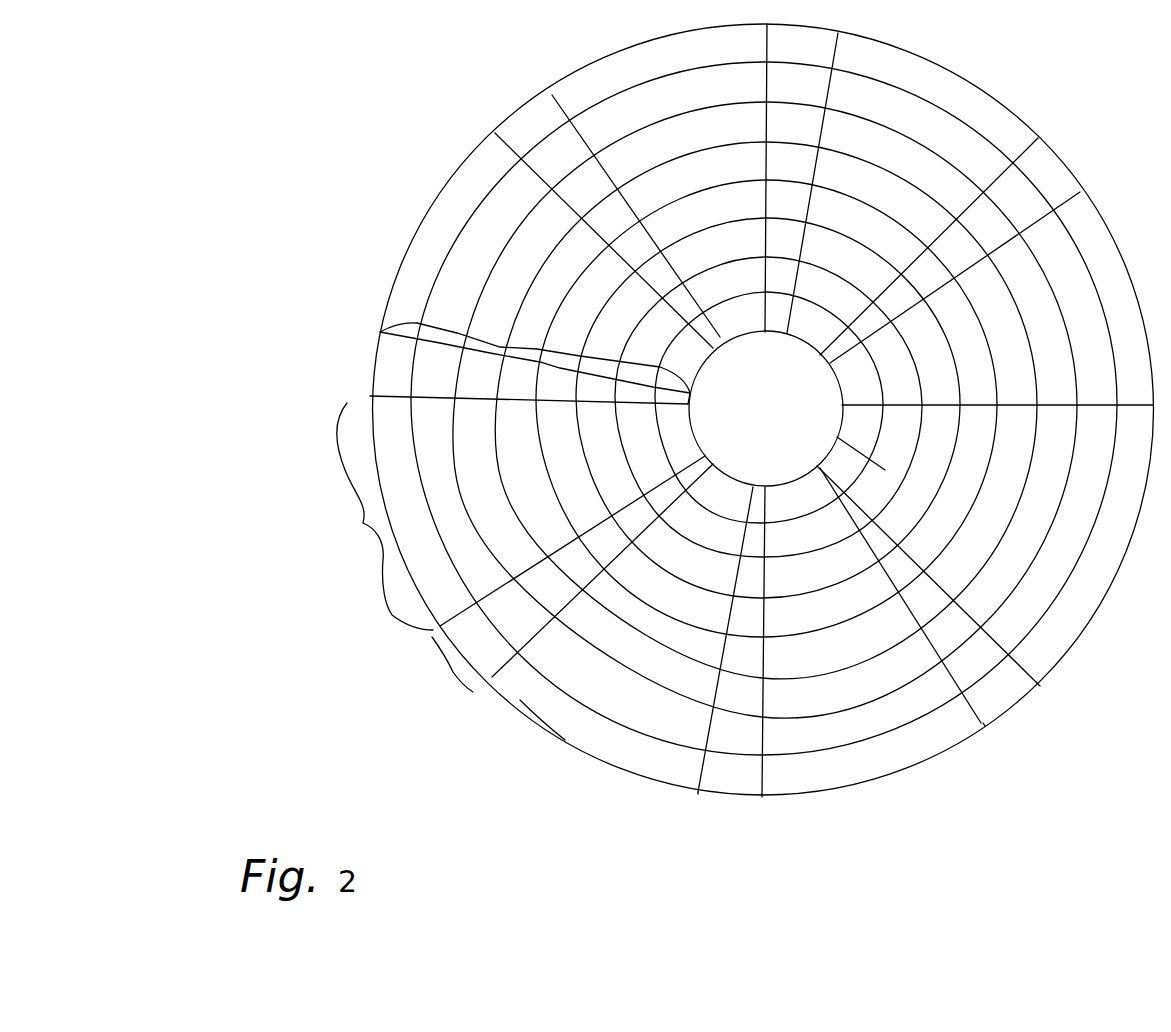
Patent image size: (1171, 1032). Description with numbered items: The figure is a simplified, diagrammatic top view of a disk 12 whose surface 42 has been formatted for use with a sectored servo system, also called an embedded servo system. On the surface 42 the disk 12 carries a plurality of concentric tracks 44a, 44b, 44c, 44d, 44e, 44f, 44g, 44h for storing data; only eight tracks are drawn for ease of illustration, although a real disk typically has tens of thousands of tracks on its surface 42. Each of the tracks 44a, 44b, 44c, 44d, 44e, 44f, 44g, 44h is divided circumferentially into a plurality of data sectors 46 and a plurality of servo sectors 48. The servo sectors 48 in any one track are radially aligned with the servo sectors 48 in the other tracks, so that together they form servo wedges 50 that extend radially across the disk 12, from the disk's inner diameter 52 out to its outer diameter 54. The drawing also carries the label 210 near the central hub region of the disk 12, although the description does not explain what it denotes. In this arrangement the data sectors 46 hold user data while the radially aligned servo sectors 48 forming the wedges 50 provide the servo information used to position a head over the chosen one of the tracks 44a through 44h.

The disk 12 is at (433, 190).
The surface 42 is at (687, 134).
The central hub 210 is at (751, 408).
The servo wedge 50 is at (537, 340).
The inner diameter 52 is at (700, 418).
The data sector 46 is at (363, 525).
The servo sector 48 is at (450, 670).
The outer diameter 54 is at (552, 728).
The track 44a is at (957, 730).
The track 44b is at (890, 715).
The track 44c is at (830, 697).
The track 44d is at (785, 663).
The track 44e is at (870, 227).
The track 44f is at (937, 367).
The track 44g is at (1150, 477).
The track 44h is at (791, 497).